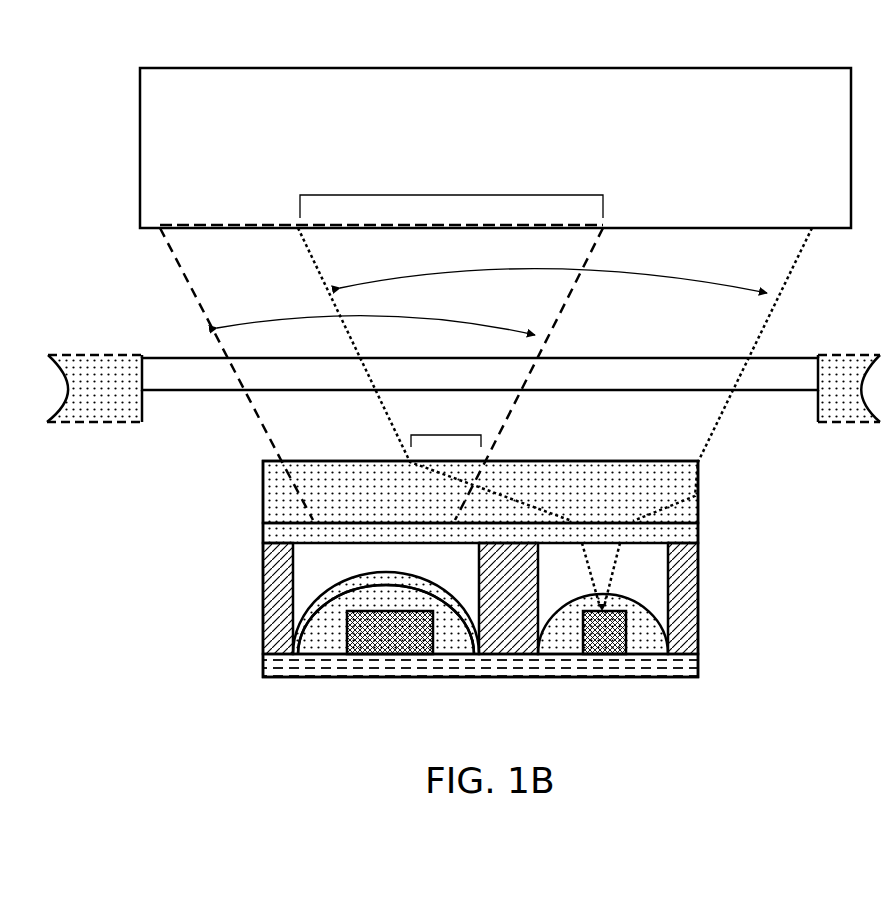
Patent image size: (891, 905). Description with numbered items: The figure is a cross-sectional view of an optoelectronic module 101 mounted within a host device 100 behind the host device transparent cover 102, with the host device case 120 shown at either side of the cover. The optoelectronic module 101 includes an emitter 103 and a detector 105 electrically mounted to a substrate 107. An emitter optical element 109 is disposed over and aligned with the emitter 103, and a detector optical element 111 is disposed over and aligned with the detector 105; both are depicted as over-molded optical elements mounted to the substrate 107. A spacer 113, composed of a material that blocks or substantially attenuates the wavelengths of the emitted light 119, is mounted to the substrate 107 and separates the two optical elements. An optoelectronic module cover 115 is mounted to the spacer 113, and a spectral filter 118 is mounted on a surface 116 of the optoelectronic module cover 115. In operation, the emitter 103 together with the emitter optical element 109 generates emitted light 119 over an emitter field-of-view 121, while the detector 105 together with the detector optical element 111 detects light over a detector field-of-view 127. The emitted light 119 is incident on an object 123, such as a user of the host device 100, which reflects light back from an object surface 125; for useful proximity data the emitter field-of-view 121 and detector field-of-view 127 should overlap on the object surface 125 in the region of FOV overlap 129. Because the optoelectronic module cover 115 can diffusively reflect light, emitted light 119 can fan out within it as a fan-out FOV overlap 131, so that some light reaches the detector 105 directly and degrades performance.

The host device 100 is at (73, 328).
The optoelectronic module 101 is at (140, 676).
The host device transparent cover 102 is at (192, 378).
The emitter 103 is at (612, 632).
The detector 105 is at (365, 640).
The substrate 107 is at (262, 670).
The emitter optical element 109 is at (638, 600).
The detector optical element 111 is at (308, 643).
The spacer 113 is at (685, 575).
The optoelectronic module cover 115 is at (277, 483).
The surface of the optoelectronic module cover 116 is at (385, 522).
The spectral filter 118 is at (348, 585).
The emitted light 119 is at (765, 328).
The host device case 120 is at (100, 410).
The emitter field-of-view 121 is at (695, 281).
The object 123 is at (255, 125).
The object surface 125 is at (275, 222).
The detector field-of-view 127 is at (275, 321).
The region of FOV overlap 129 is at (451, 187).
The fan-out FOV overlap 131 is at (455, 435).